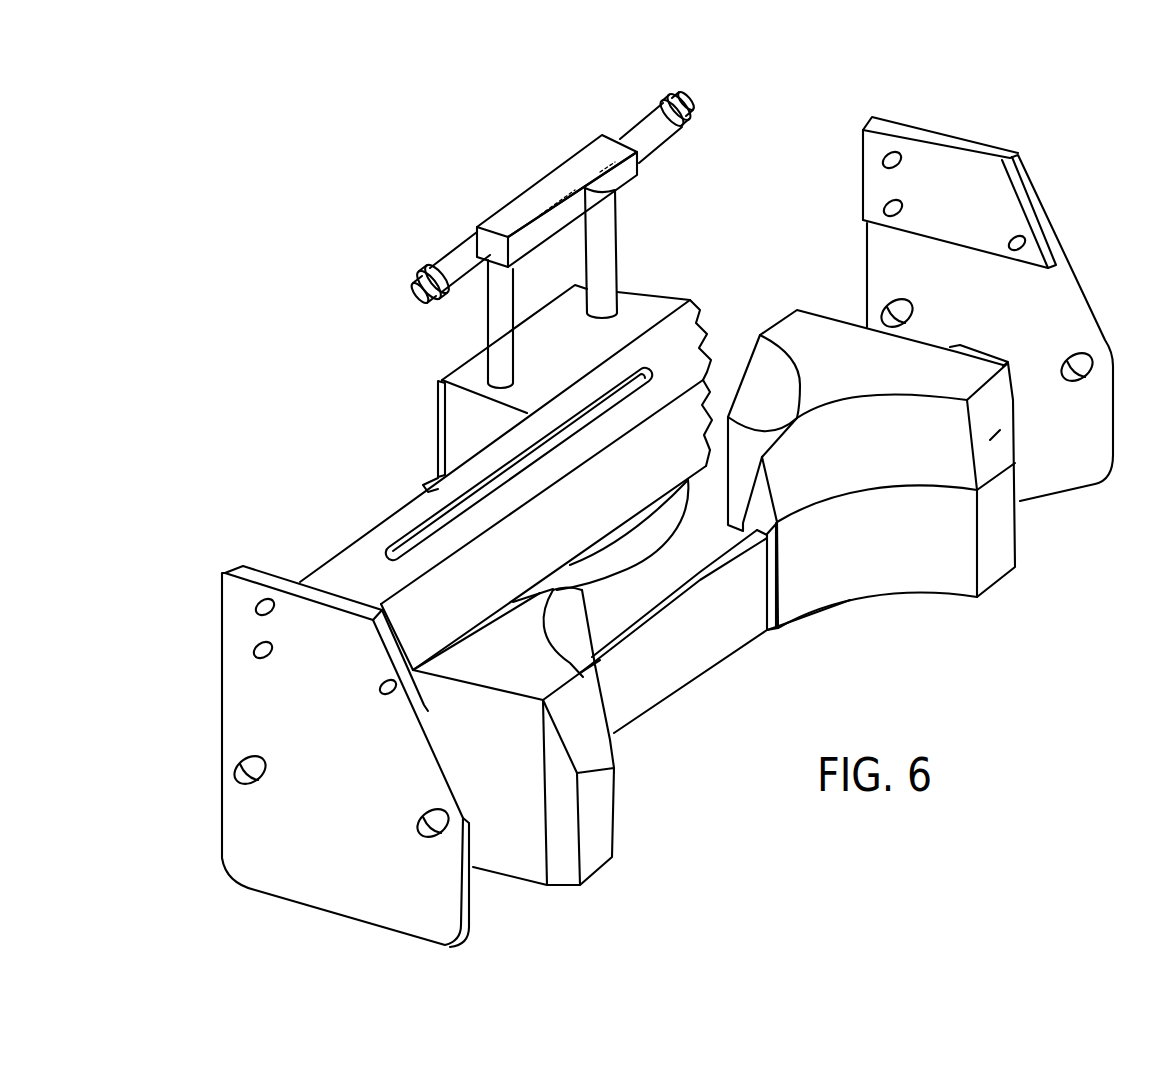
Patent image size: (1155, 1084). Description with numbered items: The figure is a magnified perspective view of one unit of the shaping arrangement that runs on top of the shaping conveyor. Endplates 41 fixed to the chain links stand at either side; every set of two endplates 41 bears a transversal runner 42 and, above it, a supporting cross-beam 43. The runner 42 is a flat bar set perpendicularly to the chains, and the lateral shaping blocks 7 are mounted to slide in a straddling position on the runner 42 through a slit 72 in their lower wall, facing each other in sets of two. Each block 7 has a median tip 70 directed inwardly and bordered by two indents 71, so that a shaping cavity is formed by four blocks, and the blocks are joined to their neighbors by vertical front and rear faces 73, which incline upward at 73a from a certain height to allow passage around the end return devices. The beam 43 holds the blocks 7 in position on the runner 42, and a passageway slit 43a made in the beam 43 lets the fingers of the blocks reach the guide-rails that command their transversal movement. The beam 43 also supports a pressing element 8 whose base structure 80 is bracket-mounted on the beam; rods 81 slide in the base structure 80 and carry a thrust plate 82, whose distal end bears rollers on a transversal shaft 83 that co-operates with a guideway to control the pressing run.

The lateral shaping block 7 is at (867, 450).
The pressing element 8 is at (375, 381).
The endplate 41 is at (235, 730).
The transversal runner 42 is at (718, 643).
The supporting cross-beam 43 is at (506, 485).
The passageway slit 43a is at (407, 540).
The median tip 70 is at (772, 597).
The indent 71 is at (760, 358).
The slit 72 is at (753, 615).
The vertical front and rear face 73 is at (600, 807).
The inclined upper portion of face 73a is at (593, 725).
The base structure 80 is at (465, 420).
The rod 81 is at (593, 268).
The thrust plate 82 is at (637, 560).
The transversal shaft 83 is at (460, 257).